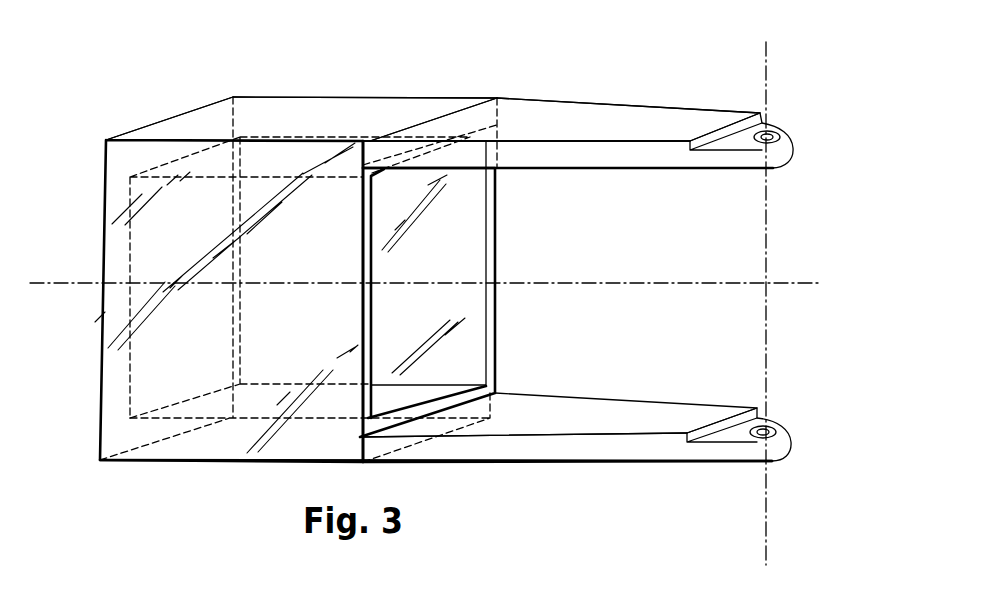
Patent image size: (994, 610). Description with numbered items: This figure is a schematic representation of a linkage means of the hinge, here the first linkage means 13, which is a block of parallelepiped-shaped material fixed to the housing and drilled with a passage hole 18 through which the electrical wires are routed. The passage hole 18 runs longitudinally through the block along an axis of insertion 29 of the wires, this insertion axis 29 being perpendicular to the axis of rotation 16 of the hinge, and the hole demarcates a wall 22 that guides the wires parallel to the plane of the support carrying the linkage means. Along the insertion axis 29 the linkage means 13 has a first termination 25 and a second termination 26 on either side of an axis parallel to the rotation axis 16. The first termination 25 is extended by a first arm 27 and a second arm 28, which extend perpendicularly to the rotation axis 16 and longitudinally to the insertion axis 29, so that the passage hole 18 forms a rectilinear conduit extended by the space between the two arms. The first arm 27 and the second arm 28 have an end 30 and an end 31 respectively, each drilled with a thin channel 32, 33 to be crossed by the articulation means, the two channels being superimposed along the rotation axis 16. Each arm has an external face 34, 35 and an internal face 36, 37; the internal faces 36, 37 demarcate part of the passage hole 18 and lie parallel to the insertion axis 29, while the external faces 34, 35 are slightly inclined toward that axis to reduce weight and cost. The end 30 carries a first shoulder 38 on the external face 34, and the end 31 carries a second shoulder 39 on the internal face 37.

The first linkage means 13 is at (355, 123).
The axis of rotation 16 is at (765, 45).
The passage hole 18 is at (457, 225).
The wall 22 is at (360, 275).
The first termination 25 is at (428, 108).
The second termination 26 is at (257, 117).
The first arm 27 is at (575, 117).
The second arm 28 is at (548, 463).
The axis of insertion 29 is at (597, 285).
The end of the first arm 30 is at (712, 115).
The end of the second arm 31 is at (712, 408).
The thin channel 32 is at (762, 142).
The thin channel 33 is at (762, 437).
The external face 34 is at (640, 117).
The external face 35 is at (673, 462).
The internal face 36 is at (640, 170).
The internal face 37 is at (605, 415).
The first shoulder 38 is at (783, 125).
The second shoulder 39 is at (782, 427).